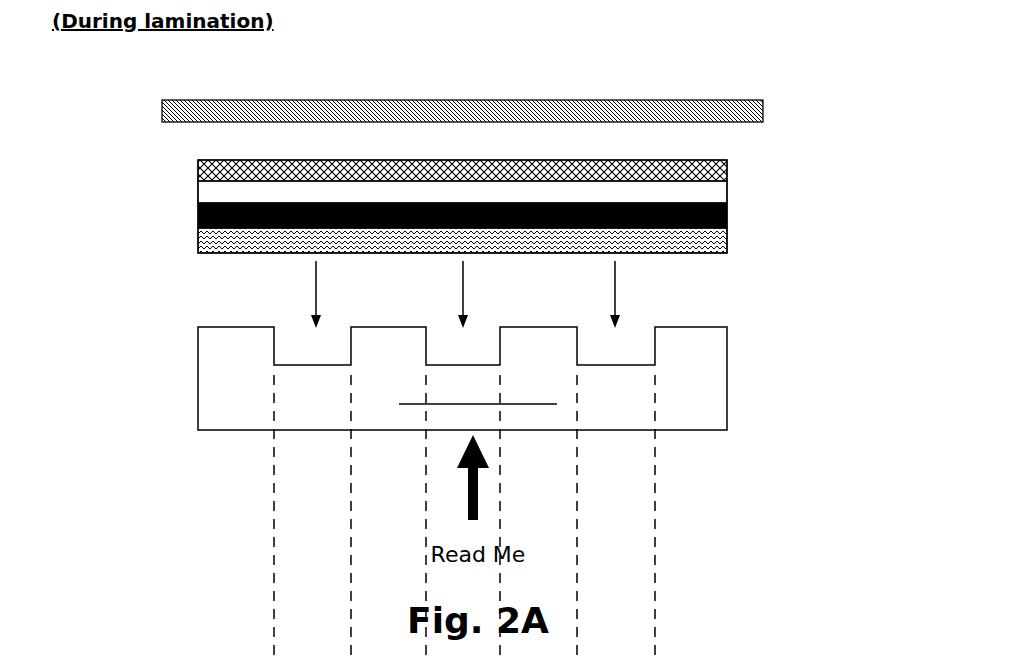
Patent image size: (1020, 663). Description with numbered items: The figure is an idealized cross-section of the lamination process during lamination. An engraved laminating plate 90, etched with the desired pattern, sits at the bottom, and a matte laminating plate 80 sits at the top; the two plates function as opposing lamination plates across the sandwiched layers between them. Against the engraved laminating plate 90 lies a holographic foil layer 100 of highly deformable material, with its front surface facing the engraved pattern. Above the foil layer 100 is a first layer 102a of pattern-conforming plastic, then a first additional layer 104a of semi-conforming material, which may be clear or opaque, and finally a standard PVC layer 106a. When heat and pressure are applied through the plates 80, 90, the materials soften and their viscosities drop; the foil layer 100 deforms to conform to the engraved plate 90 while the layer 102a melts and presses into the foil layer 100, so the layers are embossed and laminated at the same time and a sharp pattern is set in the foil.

The matte laminating plate 80 is at (162, 111).
The standard PVC layer 106a is at (727, 168).
The first additional layer of semi-conforming material 104a is at (198, 191).
The first layer of pattern conforming plastic material 102a is at (727, 215).
The holographic foil layer 100 is at (198, 247).
The engraved laminating plate 90 is at (727, 395).